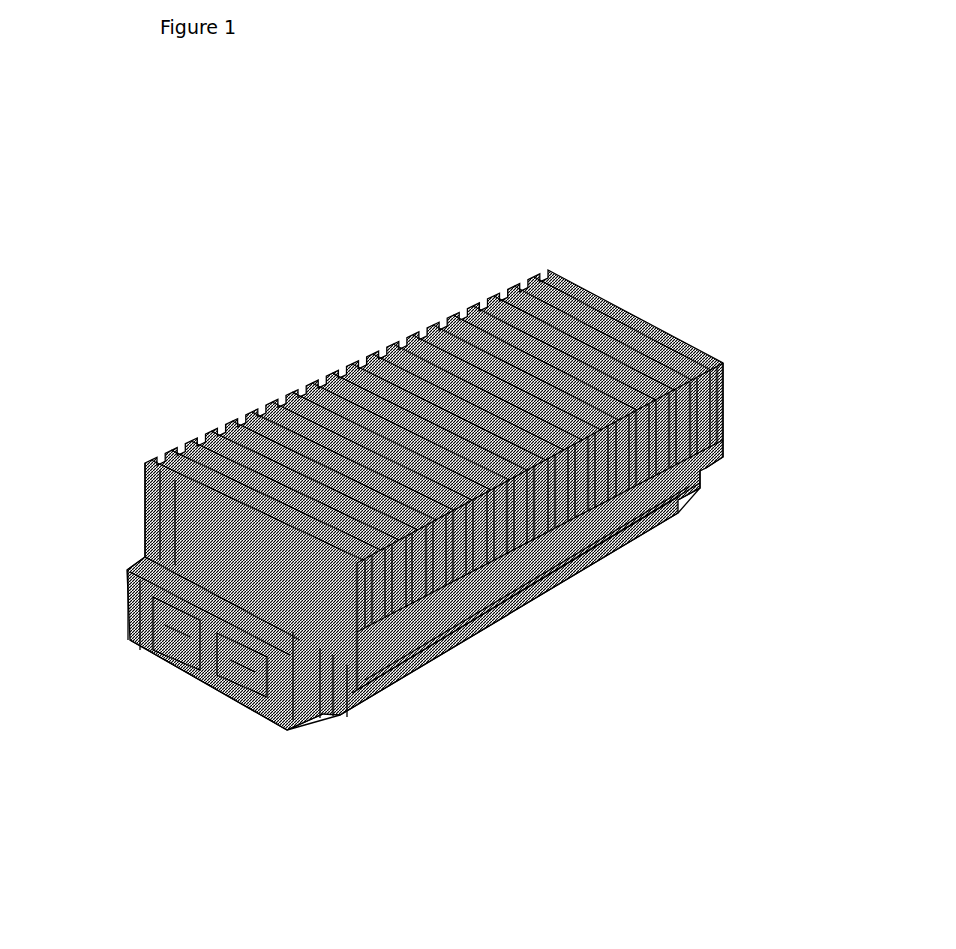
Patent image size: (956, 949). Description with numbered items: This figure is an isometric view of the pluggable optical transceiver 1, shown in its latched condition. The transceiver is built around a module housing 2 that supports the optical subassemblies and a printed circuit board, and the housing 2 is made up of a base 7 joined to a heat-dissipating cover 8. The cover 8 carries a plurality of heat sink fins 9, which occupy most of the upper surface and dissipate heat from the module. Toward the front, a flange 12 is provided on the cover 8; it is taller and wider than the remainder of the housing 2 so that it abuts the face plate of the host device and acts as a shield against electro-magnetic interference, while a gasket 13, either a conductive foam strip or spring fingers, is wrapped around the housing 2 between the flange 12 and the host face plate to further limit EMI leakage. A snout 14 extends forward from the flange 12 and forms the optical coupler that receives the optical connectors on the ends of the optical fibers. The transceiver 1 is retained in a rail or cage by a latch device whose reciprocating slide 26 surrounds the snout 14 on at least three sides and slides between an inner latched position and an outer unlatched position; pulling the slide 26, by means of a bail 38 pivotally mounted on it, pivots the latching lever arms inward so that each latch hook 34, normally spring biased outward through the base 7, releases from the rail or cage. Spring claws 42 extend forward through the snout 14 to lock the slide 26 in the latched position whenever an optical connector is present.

The pluggable optical transceiver 1 is at (372, 233).
The module housing 2 is at (547, 263).
The base 7 is at (642, 533).
The heat-dissipating cover 8 is at (712, 462).
The heat sink fins 9 is at (600, 302).
The flange 12 is at (145, 470).
The snout 14 is at (143, 560).
The reciprocating slide 26 is at (130, 640).
The latch hook 34 is at (400, 672).
The gasket 13 is at (357, 705).
The bail 38 is at (315, 715).
The spring claws 42 is at (215, 695).